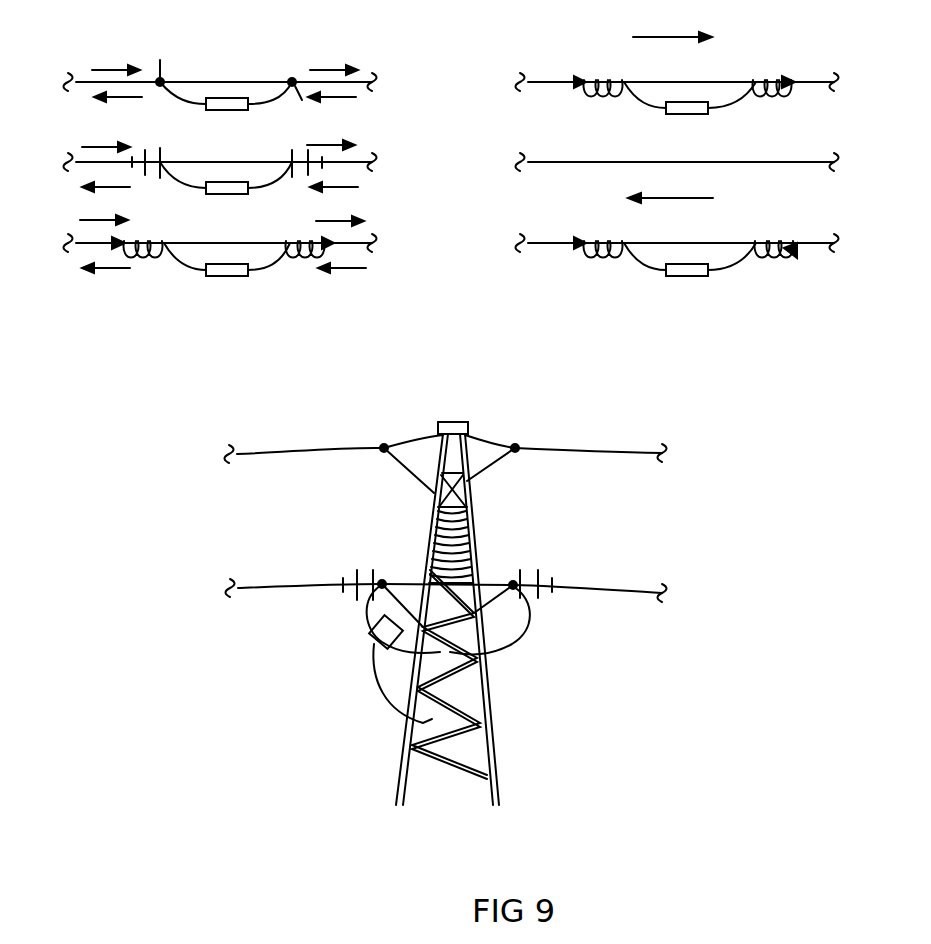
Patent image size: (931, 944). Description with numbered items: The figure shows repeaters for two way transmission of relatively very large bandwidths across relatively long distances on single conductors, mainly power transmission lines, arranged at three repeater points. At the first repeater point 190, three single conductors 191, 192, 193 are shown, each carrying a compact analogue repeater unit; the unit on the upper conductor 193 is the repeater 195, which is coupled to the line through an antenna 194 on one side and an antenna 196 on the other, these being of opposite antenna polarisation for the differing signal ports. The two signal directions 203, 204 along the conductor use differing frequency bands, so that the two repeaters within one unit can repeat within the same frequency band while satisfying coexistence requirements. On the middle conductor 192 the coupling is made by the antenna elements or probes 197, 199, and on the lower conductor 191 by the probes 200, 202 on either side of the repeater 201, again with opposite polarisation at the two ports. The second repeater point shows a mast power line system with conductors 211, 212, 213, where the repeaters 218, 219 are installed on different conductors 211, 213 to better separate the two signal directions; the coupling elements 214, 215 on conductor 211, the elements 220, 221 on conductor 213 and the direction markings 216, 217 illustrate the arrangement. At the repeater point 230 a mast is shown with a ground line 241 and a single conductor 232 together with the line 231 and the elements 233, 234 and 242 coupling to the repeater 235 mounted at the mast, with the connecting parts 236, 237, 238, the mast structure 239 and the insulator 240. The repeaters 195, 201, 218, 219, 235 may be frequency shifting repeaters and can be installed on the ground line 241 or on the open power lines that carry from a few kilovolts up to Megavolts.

The repeater point 190 is at (323, 298).
The single conductor 191 is at (91, 239).
The single conductor 192 is at (91, 159).
The single conductor 193 is at (91, 79).
The antenna 194 is at (160, 72).
The repeater 195 is at (238, 96).
The antenna 196 is at (289, 100).
The antenna 197 is at (154, 149).
The antenna 199 is at (300, 150).
The antenna 200 is at (151, 230).
The repeater 201 is at (240, 252).
The antenna 202 is at (308, 230).
The signal direction 203 is at (345, 66).
The signal direction 204 is at (338, 100).
The conductor 211 is at (543, 79).
The single conductor 212 is at (543, 159).
The conductor 213 is at (543, 239).
The inductor with diode 214 is at (594, 70).
The inductor with diode 215 is at (759, 74).
The current direction arrow 216 is at (663, 18).
The current direction arrow 217 is at (663, 181).
The repeater 218 is at (688, 88).
The repeater 219 is at (688, 250).
The inductor with diode 220 is at (594, 232).
The inductor with diode 221 is at (759, 236).
The repeater point 230 is at (550, 838).
The transmission line 231 is at (258, 578).
The single conductor 232 is at (644, 579).
The capacitor 233 is at (338, 576).
The capacitor 234 is at (555, 576).
The repeater 235 is at (366, 626).
The cable 236 is at (368, 656).
The connection 237 is at (362, 604).
The cable loop 238 is at (526, 628).
The transmission tower 239 is at (503, 754).
The insulator 240 is at (472, 527).
The ground line 241 is at (578, 445).
The connection node 242 is at (510, 579).